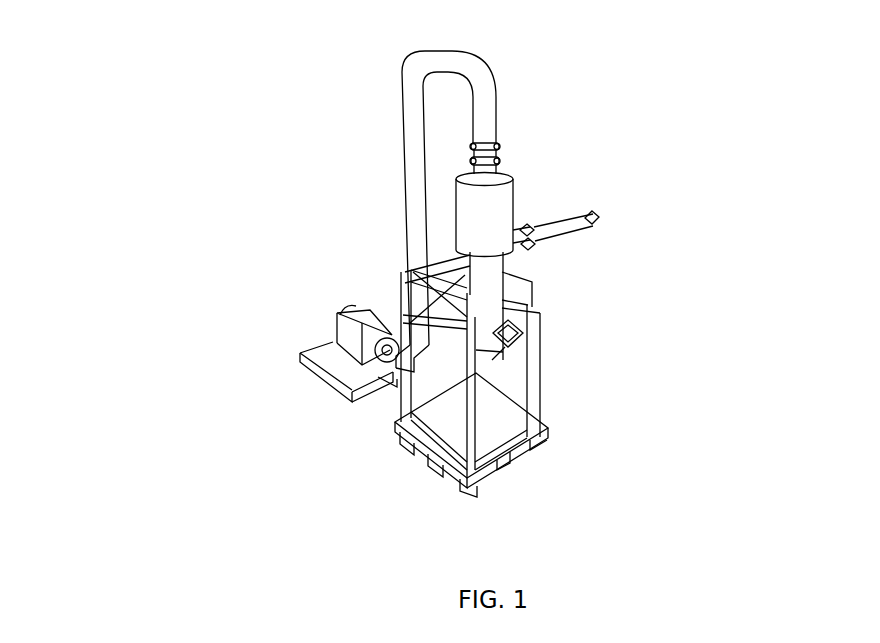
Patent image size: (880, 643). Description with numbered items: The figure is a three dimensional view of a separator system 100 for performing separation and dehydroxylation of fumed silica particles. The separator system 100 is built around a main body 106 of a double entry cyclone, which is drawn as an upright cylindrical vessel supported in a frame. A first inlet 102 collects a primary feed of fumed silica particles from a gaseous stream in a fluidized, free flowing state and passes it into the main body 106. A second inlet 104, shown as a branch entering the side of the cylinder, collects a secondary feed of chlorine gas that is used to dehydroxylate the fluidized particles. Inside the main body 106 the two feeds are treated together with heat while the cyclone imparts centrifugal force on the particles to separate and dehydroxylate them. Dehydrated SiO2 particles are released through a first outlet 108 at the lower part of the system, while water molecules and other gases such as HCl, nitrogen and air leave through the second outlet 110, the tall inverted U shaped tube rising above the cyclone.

The separator system 100 is at (61, 23).
The second outlet 110 is at (410, 137).
The main body 106 is at (500, 207).
The second inlet 104 is at (603, 214).
The first inlet 102 is at (512, 326).
The first outlet 108 is at (487, 350).